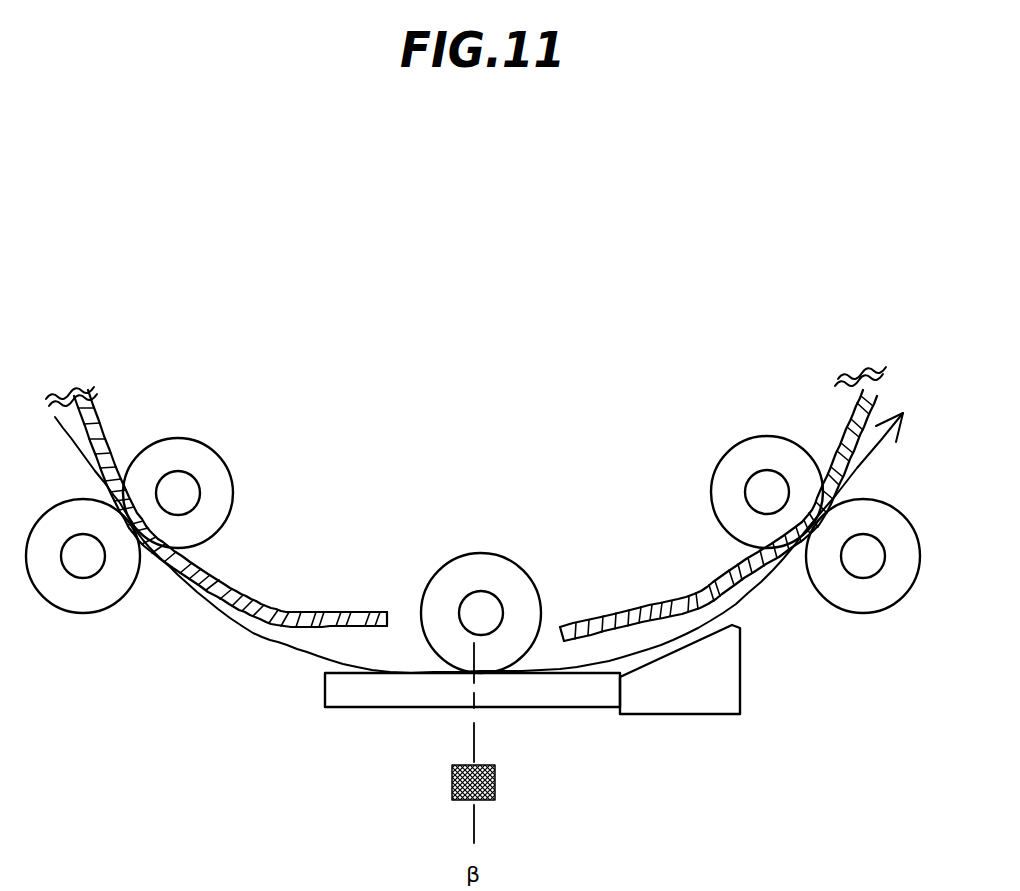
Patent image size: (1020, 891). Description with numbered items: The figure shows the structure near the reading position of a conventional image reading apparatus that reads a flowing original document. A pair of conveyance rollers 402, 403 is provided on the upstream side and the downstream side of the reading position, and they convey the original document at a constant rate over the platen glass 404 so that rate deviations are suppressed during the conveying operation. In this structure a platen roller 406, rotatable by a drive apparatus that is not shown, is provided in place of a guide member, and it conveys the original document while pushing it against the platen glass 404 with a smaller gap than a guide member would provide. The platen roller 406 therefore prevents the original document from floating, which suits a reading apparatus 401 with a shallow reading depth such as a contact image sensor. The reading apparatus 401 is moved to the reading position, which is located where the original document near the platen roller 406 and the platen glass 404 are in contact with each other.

The reading apparatus 401 is at (495, 785).
The conveyance roller 402 is at (200, 465).
The conveyance roller 403 is at (753, 460).
The platen glass 404 is at (367, 702).
The platen roller 406 is at (502, 588).